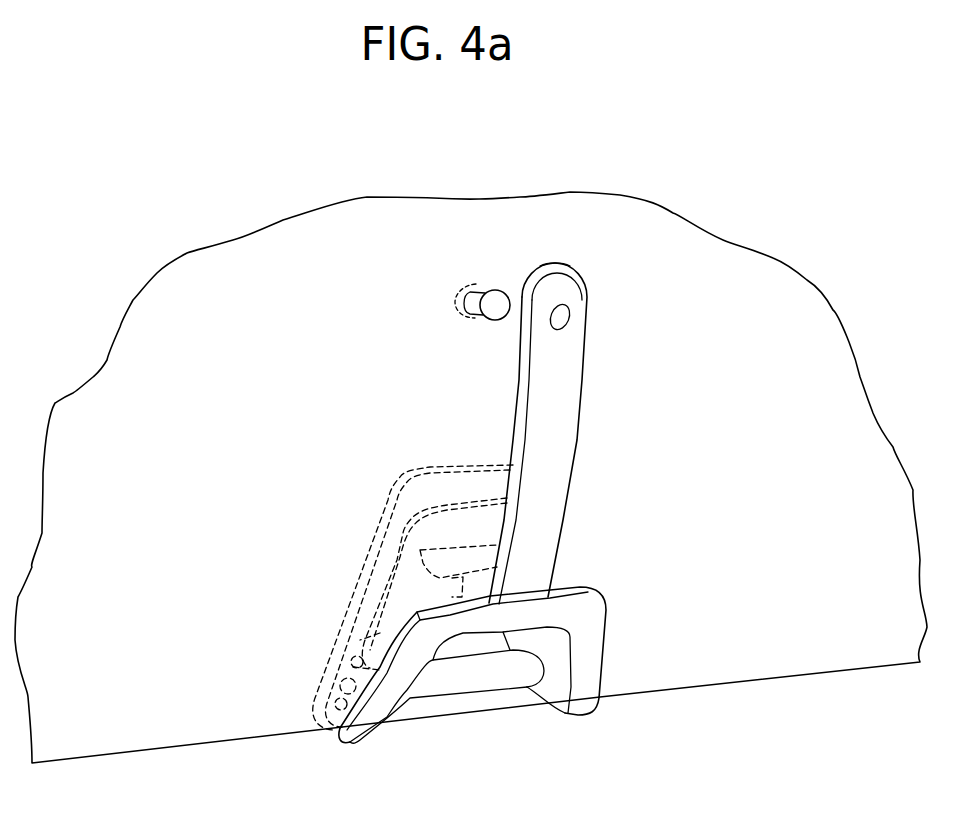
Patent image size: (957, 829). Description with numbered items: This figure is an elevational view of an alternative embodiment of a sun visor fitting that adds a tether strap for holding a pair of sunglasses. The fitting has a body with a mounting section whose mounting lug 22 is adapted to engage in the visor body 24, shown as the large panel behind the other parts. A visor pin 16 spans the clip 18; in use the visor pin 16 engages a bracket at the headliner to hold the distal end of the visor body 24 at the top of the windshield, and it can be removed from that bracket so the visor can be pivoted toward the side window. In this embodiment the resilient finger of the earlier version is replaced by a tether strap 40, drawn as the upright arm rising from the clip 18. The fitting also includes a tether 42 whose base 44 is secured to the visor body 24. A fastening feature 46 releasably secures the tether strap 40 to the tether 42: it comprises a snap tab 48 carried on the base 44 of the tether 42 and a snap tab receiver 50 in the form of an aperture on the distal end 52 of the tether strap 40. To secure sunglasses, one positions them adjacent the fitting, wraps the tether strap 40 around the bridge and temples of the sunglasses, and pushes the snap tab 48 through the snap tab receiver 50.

The visor pin 16 is at (481, 680).
The clip 18 is at (593, 618).
The mounting lug 22 is at (395, 630).
The visor body 24 is at (750, 490).
The tether strap 40 is at (553, 418).
The tether 42 is at (436, 268).
The base 44 is at (468, 283).
The fastening feature 46 is at (767, 226).
The snap tab 48 is at (490, 318).
The snap tab receiver 50 is at (570, 320).
The distal end 52 is at (558, 265).